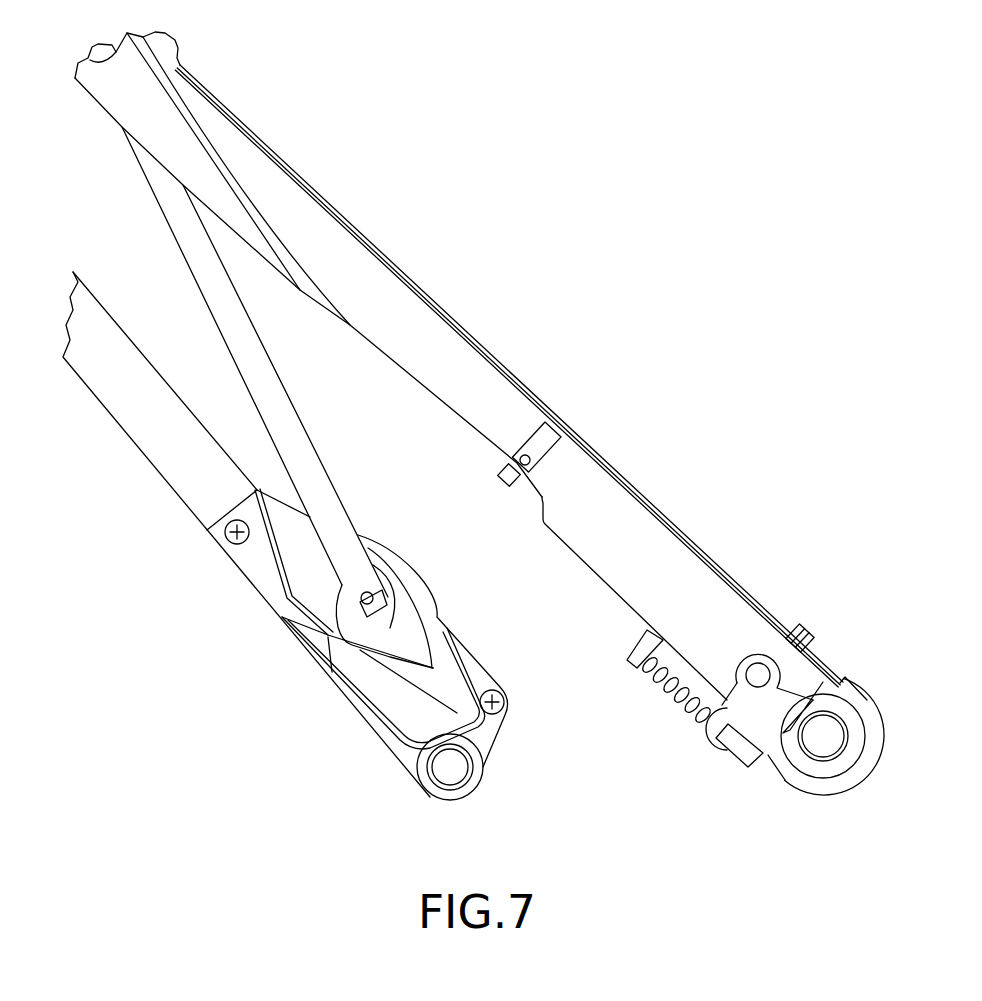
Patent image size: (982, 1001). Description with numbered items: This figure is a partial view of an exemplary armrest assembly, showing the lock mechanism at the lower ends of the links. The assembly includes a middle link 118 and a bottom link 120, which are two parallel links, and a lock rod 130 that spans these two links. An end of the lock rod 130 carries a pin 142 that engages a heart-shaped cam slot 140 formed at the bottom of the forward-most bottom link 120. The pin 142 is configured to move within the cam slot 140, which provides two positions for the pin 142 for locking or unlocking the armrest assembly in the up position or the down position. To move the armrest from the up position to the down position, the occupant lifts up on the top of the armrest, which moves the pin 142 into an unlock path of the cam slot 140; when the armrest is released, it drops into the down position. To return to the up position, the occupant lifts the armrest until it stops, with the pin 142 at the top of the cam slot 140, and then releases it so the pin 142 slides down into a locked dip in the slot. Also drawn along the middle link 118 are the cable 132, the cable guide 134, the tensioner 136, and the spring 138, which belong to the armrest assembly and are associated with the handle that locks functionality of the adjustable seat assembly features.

The middle link 118 is at (427, 328).
The bottom link 120 is at (160, 450).
The lock rod 130 is at (292, 430).
The cable 132 is at (660, 507).
The cable guide 134 is at (863, 707).
The tensioner 136 is at (737, 745).
The spring 138 is at (677, 703).
The heart-shaped cam slot 140 is at (390, 630).
The pin 142 is at (373, 597).